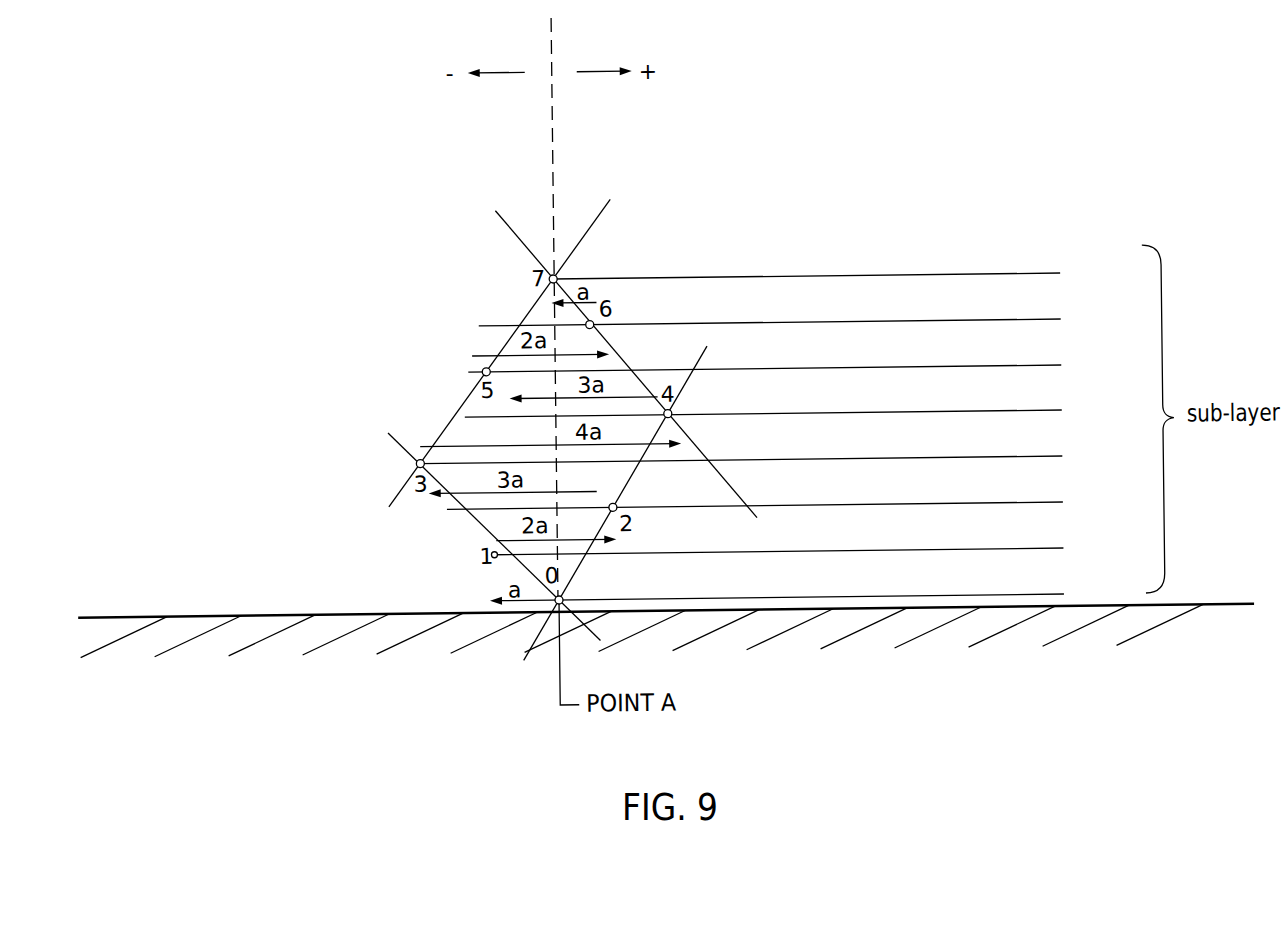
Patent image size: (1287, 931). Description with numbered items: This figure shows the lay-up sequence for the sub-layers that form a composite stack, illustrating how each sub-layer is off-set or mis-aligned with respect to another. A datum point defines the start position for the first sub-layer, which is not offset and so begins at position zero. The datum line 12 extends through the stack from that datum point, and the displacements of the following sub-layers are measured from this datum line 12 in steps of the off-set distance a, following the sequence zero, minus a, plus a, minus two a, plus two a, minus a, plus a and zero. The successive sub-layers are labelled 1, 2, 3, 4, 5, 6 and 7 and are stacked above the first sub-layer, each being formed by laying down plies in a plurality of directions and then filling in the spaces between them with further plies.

The datum line 12 is at (558, 181).
The sub-layer 1 is at (1081, 554).
The sub-layer 2 is at (1081, 508).
The sub-layer 3 is at (1081, 462).
The sub-layer 4 is at (1081, 416).
The sub-layer 5 is at (1081, 371).
The sub-layer 6 is at (1081, 325).
The sub-layer 7 is at (1081, 279).